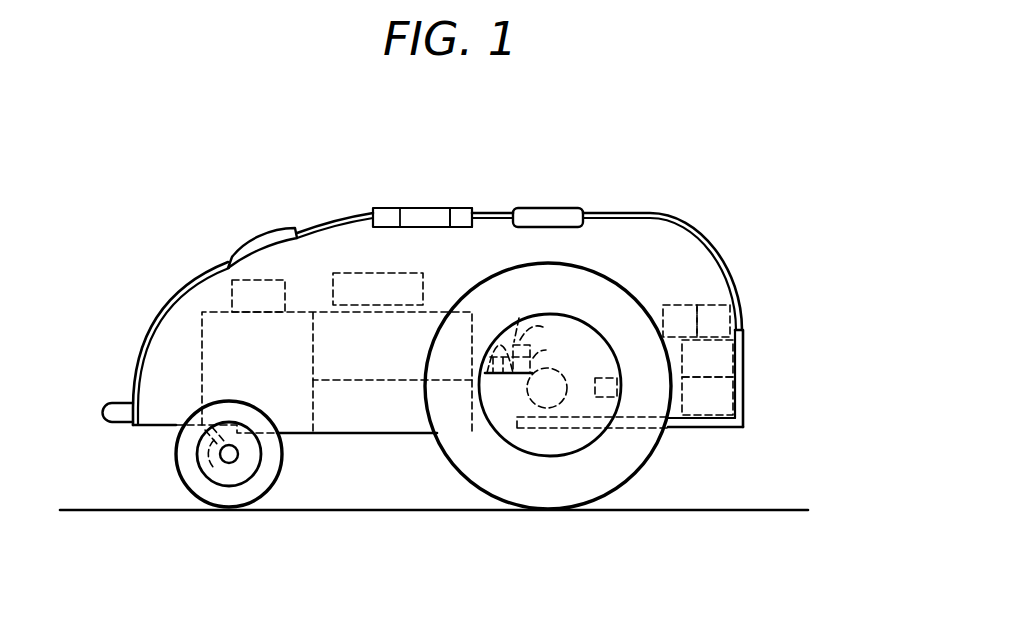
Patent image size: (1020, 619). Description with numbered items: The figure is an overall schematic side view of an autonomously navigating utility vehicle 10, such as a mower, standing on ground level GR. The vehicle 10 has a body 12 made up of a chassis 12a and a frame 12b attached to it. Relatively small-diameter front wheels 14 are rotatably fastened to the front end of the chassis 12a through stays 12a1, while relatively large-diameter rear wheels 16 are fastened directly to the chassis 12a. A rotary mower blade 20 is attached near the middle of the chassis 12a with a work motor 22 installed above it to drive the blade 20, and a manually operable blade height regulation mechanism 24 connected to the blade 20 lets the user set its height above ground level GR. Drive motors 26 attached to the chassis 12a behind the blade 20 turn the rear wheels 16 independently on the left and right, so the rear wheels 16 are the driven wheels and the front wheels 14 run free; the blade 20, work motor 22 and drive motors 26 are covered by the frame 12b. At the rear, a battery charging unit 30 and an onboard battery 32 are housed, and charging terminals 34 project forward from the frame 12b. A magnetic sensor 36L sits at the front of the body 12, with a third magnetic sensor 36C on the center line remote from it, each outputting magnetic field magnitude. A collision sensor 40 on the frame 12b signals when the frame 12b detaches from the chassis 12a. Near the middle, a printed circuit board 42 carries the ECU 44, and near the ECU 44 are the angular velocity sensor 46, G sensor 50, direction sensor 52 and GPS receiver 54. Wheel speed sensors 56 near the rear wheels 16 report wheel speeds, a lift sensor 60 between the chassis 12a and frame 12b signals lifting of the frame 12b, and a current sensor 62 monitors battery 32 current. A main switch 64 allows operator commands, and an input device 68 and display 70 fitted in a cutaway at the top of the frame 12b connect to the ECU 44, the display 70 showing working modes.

The utility vehicle 10 is at (697, 218).
The body 12 is at (770, 376).
The chassis 12a is at (746, 421).
The frame 12b is at (740, 312).
The stays 12a1 is at (176, 455).
The front wheels 14 is at (178, 482).
The rear wheels 16 is at (453, 462).
The mower blade 20 is at (381, 420).
The work motor 22 is at (377, 358).
The blade height regulation mechanism 24 is at (366, 306).
The drive motors 26 is at (552, 367).
The battery charging unit 30 is at (696, 370).
The onboard battery 32 is at (696, 406).
The charging terminals 34 is at (127, 403).
The magnetic sensor 36L is at (260, 252).
The third magnetic sensor 36C is at (557, 208).
The collision sensor 40 is at (246, 313).
The printed circuit board 42 is at (505, 377).
The ECU 44 is at (490, 352).
The angular velocity sensor 46 is at (502, 343).
The G sensor 50 is at (522, 319).
The direction sensor 52 is at (543, 330).
The GPS receiver 54 is at (552, 351).
The wheel speed sensors 56 is at (617, 378).
The lift sensor 60 is at (700, 331).
The current sensor 62 is at (667, 331).
The main switch 64 is at (429, 190).
The input device 68 is at (460, 212).
The display 70 is at (428, 212).
The ground level GR is at (683, 508).